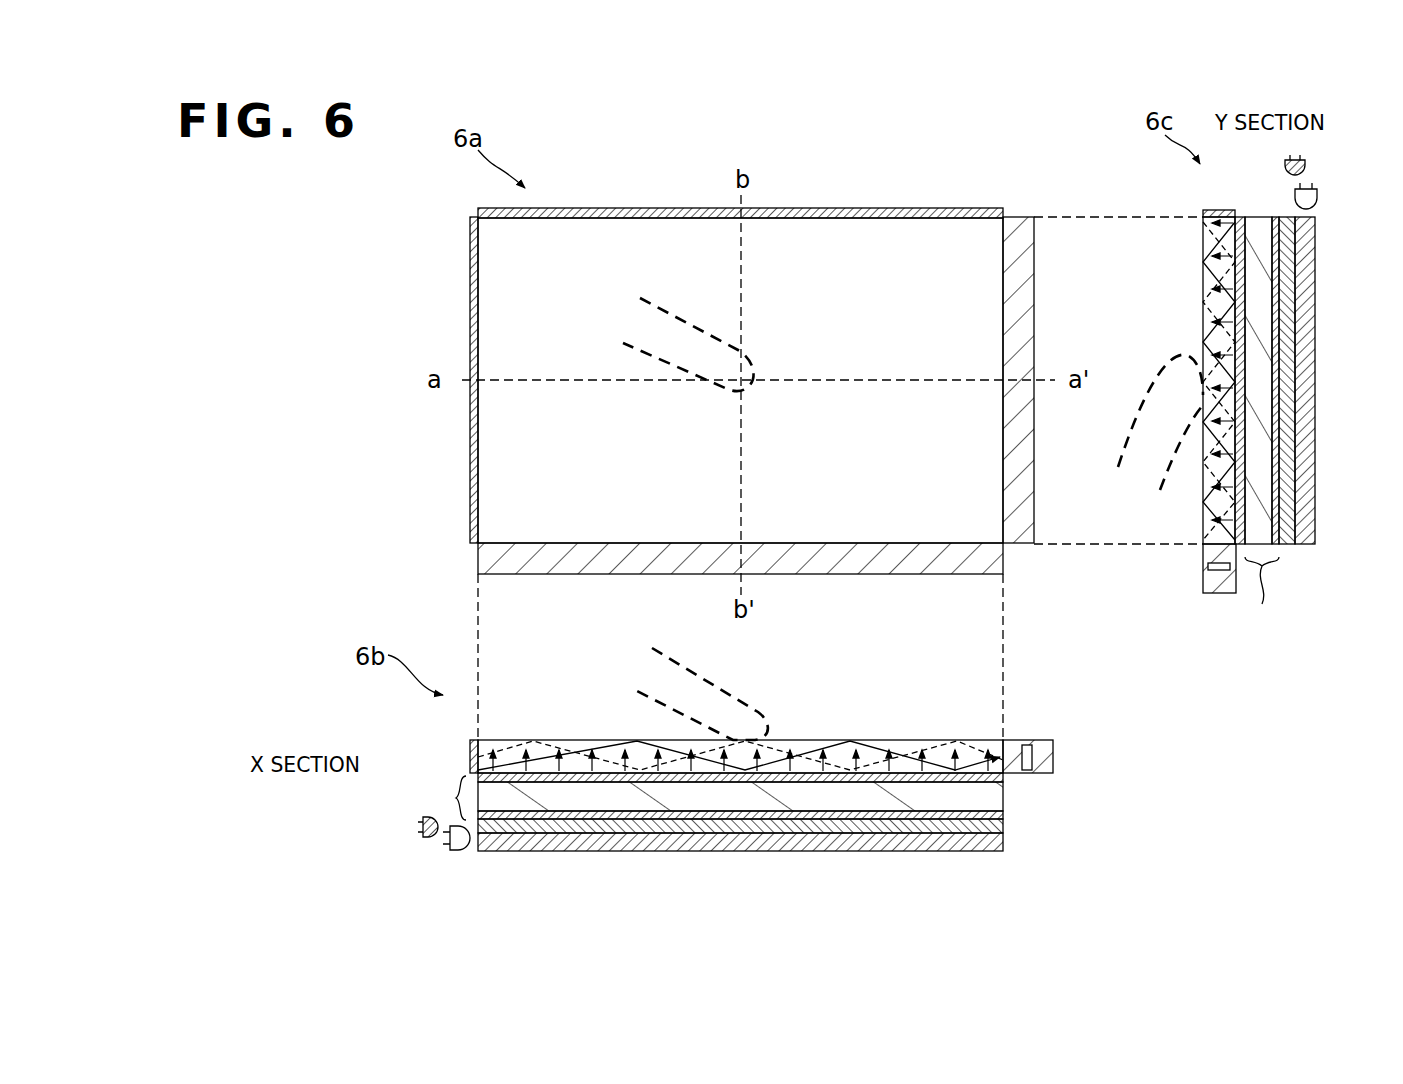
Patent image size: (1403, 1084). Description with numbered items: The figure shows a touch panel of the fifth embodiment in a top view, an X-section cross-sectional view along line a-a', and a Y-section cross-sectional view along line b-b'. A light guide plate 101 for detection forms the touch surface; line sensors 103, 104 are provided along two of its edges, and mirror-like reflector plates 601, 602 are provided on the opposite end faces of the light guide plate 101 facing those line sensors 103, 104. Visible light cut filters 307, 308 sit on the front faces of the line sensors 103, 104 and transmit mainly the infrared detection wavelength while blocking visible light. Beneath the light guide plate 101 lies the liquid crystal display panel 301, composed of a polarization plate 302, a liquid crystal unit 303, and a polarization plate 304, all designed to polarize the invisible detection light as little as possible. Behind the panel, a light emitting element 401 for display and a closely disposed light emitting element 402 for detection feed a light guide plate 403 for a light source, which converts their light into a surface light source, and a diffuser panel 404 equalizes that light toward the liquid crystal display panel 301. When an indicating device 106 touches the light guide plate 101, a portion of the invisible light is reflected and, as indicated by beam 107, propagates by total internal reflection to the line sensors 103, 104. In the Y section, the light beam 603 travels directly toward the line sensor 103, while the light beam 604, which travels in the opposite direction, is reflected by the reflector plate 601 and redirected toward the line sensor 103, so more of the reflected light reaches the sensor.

The light guide plate for detection 101 is at (548, 740).
The line sensor 103 is at (478, 562).
The line sensor 104 is at (1020, 216).
The indicating device 106 is at (716, 676).
The beam 107 is at (875, 740).
The liquid crystal display panel 301 is at (452, 795).
The polarization plate 302 is at (1004, 778).
The liquid crystal unit 303 is at (1000, 795).
The polarization plate 304 is at (1004, 815).
The visible light cut filter 307 is at (1203, 553).
The visible light cut filter 308 is at (1027, 745).
The light emitting element for display 401 is at (458, 852).
The light emitting element for detection 402 is at (418, 830).
The light guide plate for a light source 403 is at (660, 842).
The diffuser panel 404 is at (875, 827).
The reflector plate 601 is at (880, 208).
The reflector plate 602 is at (470, 267).
The light beam 603 is at (1200, 497).
The light beam 604 is at (1203, 338).